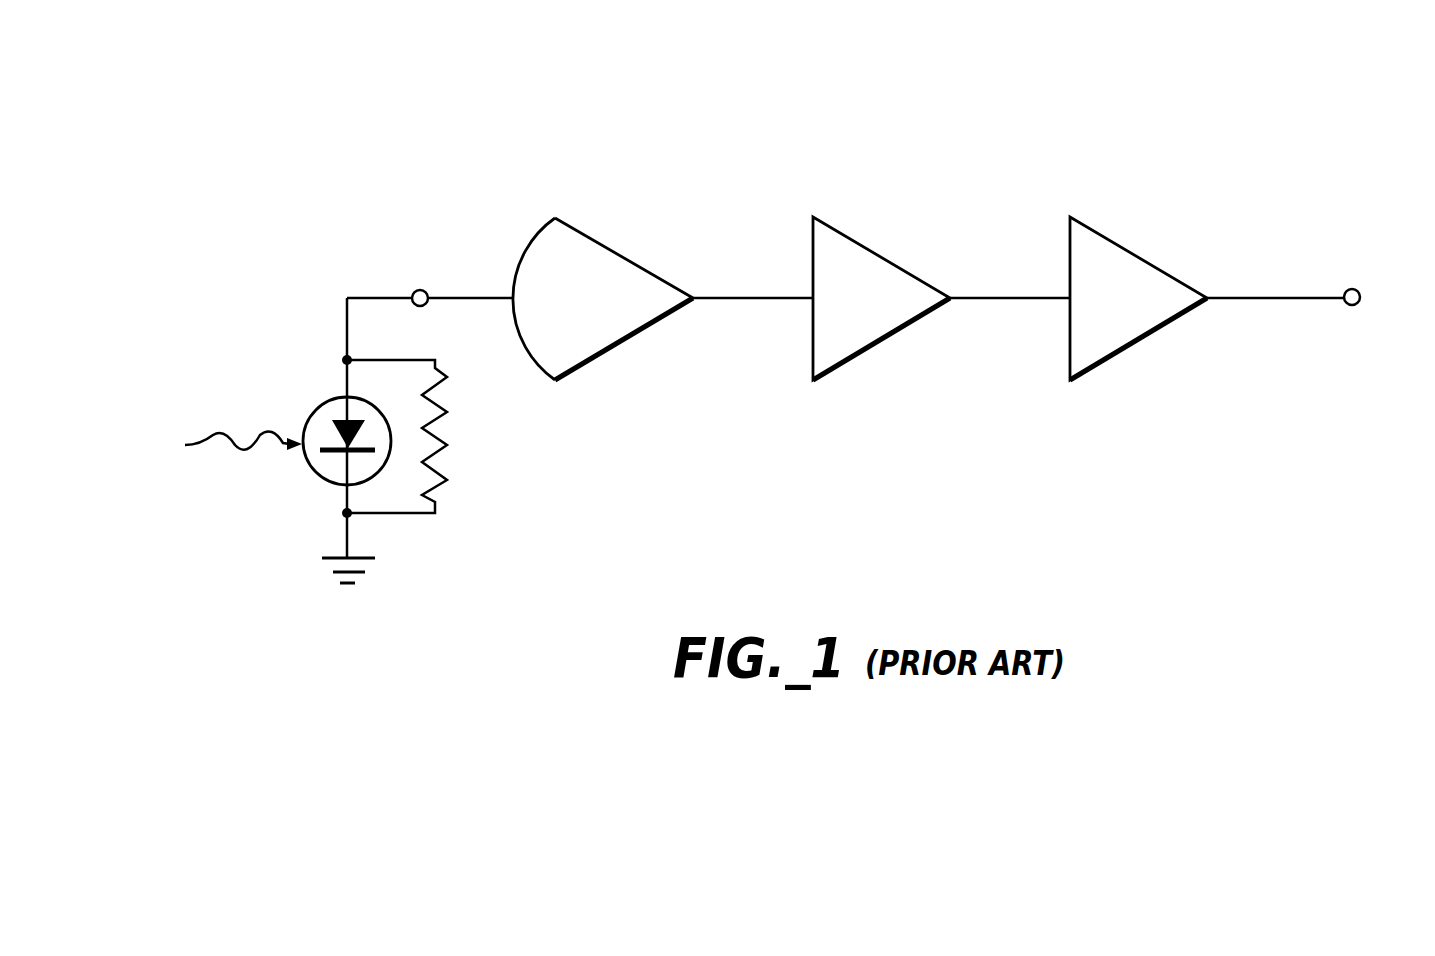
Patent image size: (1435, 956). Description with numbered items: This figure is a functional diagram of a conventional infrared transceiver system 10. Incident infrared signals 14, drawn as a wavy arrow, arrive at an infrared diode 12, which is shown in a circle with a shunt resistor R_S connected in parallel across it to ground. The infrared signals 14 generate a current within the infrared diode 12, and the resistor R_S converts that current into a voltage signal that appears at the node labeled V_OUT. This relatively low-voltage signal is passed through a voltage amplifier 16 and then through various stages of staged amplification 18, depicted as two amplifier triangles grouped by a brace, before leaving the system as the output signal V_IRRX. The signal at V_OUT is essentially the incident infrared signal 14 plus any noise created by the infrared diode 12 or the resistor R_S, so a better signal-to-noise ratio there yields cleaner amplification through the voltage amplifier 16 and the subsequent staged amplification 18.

The infrared transceiver system 10 is at (1094, 104).
The infrared diode 12 is at (328, 398).
The infrared signals 14 is at (218, 437).
The voltage amplifier 16 is at (537, 228).
The staged amplification 18 is at (1225, 402).